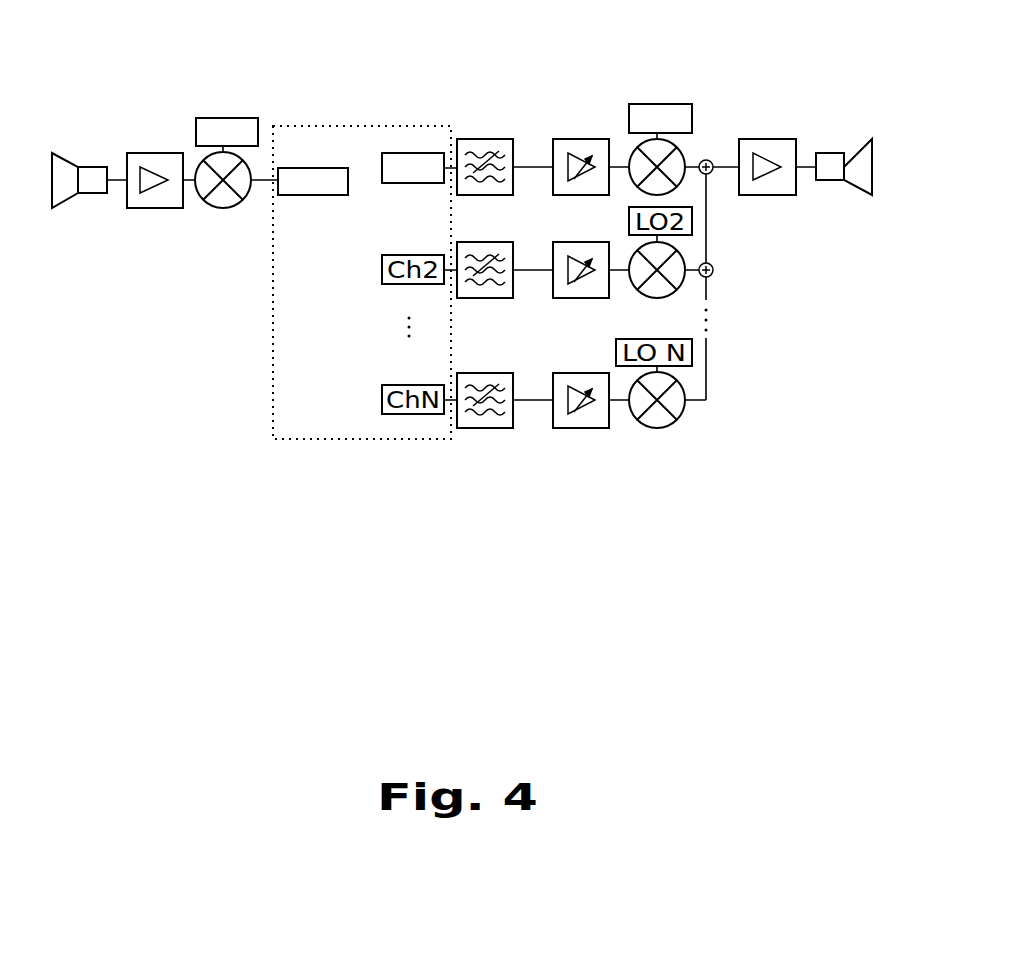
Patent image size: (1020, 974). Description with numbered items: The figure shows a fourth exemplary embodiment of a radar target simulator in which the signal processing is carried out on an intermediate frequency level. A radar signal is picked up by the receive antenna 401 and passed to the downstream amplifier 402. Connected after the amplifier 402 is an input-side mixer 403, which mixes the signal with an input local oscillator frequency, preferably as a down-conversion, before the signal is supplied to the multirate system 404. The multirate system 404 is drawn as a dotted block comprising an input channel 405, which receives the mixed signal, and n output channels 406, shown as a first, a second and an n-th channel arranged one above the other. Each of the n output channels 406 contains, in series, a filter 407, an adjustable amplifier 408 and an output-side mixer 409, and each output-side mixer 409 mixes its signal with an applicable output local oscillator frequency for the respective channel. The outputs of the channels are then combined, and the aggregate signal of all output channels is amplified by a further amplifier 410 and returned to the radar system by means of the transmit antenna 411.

The receive antenna 401 is at (67, 169).
The amplifier 402 is at (160, 157).
The input-side mixer 403 is at (225, 197).
The multirate system 404 is at (357, 129).
The input channel 405 is at (303, 195).
The output channels 406 is at (409, 133).
The filter 407 is at (486, 119).
The adjustable amplifier 408 is at (579, 119).
The output-side mixer 409 is at (657, 83).
The amplifier 410 is at (766, 146).
The transmit antenna 411 is at (858, 158).